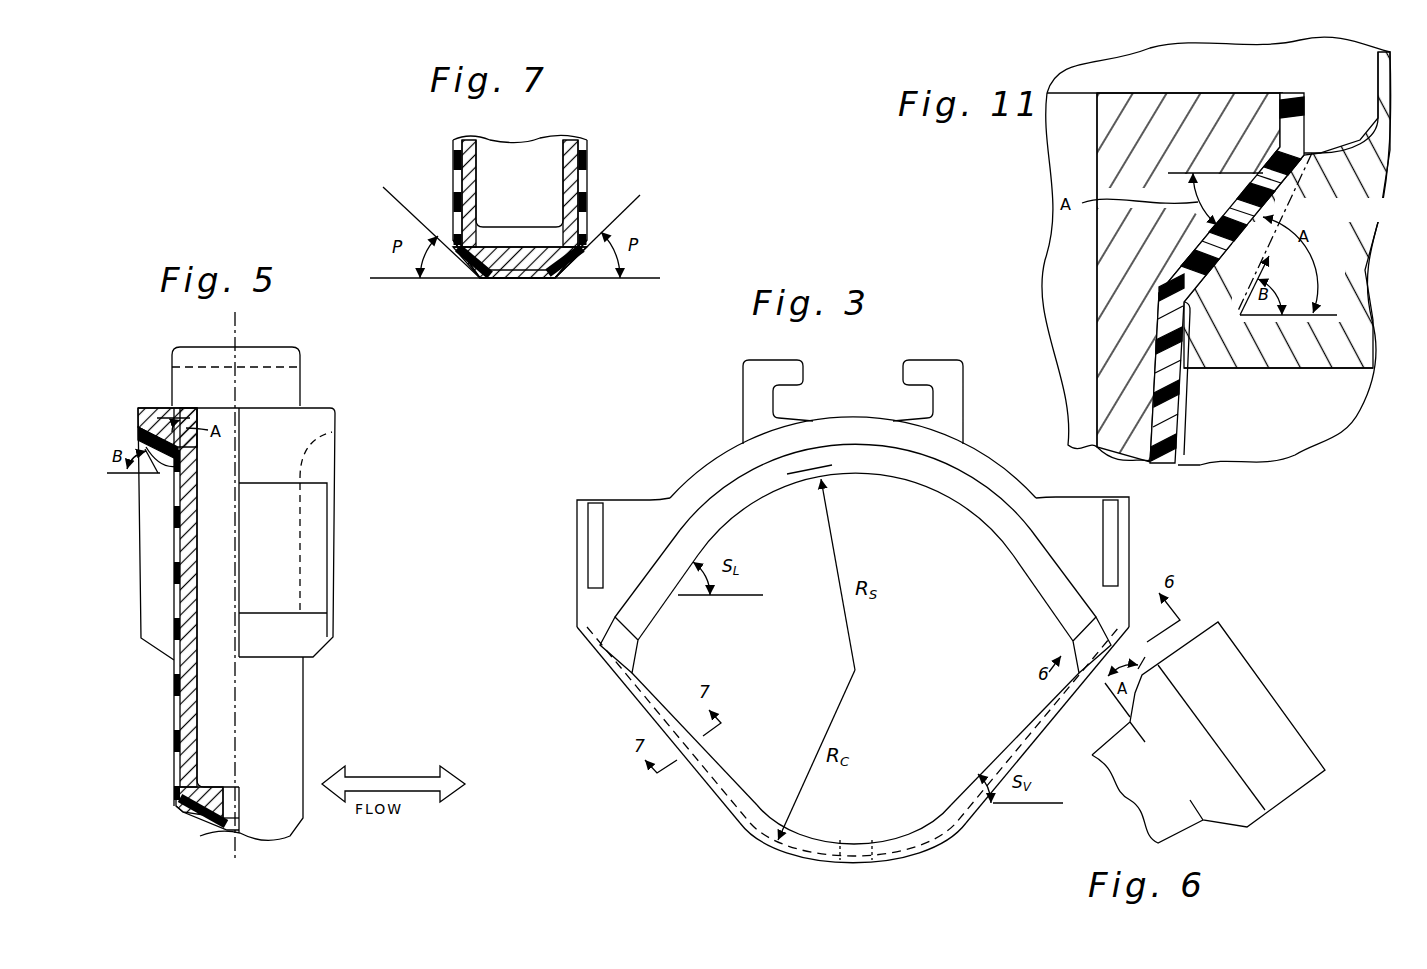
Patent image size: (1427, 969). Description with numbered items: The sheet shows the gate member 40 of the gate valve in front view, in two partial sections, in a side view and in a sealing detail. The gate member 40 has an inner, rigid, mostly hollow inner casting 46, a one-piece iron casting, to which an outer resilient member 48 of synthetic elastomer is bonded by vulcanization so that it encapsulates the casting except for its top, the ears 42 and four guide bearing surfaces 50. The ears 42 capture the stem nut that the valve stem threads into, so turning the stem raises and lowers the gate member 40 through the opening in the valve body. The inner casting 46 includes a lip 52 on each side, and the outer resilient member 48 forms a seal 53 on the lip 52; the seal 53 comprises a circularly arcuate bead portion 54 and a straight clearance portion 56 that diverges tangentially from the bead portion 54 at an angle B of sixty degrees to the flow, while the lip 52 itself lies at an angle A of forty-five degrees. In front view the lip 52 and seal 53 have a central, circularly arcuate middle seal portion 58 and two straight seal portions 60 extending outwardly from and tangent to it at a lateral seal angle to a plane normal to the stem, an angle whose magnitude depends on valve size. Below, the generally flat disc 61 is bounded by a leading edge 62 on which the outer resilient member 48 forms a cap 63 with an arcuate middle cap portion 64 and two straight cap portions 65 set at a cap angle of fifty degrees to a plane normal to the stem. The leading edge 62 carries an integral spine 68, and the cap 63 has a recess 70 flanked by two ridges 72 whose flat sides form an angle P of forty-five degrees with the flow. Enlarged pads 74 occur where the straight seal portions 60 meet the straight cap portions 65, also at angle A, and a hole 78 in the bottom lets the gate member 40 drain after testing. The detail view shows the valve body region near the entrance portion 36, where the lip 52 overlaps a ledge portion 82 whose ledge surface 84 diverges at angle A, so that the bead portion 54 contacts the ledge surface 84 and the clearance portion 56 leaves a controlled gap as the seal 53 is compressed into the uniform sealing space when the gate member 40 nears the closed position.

In FIG. 11, the entrance portion 36 is at (1300, 417).
In FIG. 3, the gate member 40 is at (986, 446).
In FIG. 5, the ears 42 is at (175, 348).
In FIG. 3, the ears 42 is at (903, 364).
In FIG. 5, the inner casting 46 is at (190, 783).
In FIG. 7, the inner casting 46 is at (470, 143).
In FIG. 11, the inner casting 46 is at (1113, 452).
In FIG. 5, the outer resilient member 48 is at (176, 757).
In FIG. 7, the outer resilient member 48 is at (455, 160).
In FIG. 11, the outer resilient member 48 is at (1170, 463).
In FIG. 3, the guide bearing surfaces 50 is at (596, 503).
In FIG. 5, the lip 52 is at (152, 408).
In FIG. 11, the lip 52 is at (1228, 92).
In FIG. 5, the seal 53 is at (137, 438).
In FIG. 3, the seal 53 is at (982, 517).
In FIG. 5, the bead portion 54 is at (166, 462).
In FIG. 11, the bead portion 54 is at (1195, 305).
In FIG. 5, the clearance portion 56 is at (137, 430).
In FIG. 11, the clearance portion 56 is at (1280, 207).
In FIG. 3, the middle seal portion 58 is at (931, 488).
In FIG. 3, the straight seal portions 60 is at (748, 502).
In FIG. 5, the disc 61 is at (300, 698).
In FIG. 3, the disc 61 is at (937, 702).
In FIG. 5, the leading edge 62 is at (182, 810).
In FIG. 7, the leading edge 62 is at (457, 252).
In FIG. 7, the cap 63 is at (513, 280).
In FIG. 3, the middle cap portion 64 is at (806, 847).
In FIG. 3, the straight cap portions 65 is at (719, 763).
In FIG. 7, the spine 68 is at (520, 252).
In FIG. 7, the recess 70 is at (526, 277).
In FIG. 7, the ridges 72 is at (478, 277).
In FIG. 3, the enlarged pads 74 is at (612, 655).
In FIG. 5, the hole 78 is at (234, 834).
In FIG. 11, the ledge portions 82 is at (1235, 362).
In FIG. 11, the ledge surface 84 is at (1300, 150).